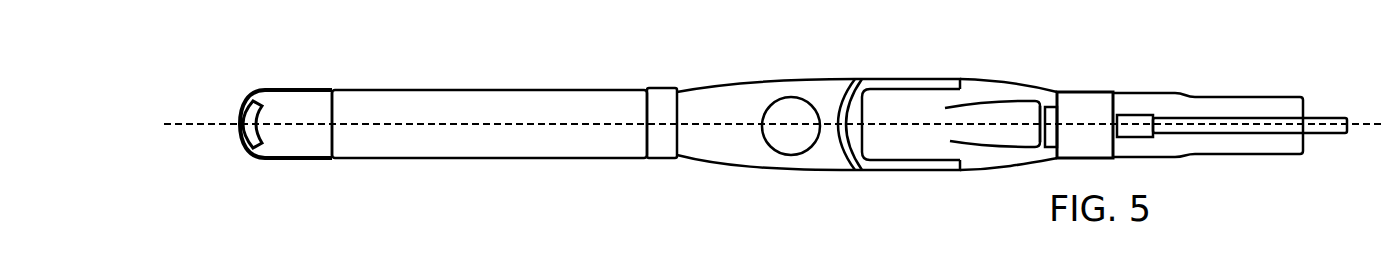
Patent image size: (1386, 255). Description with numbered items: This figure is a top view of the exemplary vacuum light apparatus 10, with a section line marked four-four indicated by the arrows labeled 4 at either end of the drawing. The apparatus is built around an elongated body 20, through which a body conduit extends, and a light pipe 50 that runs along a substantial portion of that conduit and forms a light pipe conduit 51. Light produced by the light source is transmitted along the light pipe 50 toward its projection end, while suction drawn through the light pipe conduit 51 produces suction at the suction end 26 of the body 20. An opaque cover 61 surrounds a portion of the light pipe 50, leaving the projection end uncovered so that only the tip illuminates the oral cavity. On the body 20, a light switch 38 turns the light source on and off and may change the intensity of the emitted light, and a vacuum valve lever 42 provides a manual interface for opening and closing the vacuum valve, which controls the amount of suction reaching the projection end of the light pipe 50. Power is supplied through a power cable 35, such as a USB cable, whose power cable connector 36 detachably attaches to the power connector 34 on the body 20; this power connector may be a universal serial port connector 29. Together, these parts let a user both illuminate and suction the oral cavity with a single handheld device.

The section line 4- 4 is at (164, 124).
The vacuum light apparatus 10 is at (732, 82).
The body 20 is at (946, 108).
The suction end 26 is at (668, 159).
The universal serial port connector 29 is at (1040, 135).
The power connector 34 is at (1040, 105).
The power cable 35 is at (1177, 125).
The power cable connector 36 is at (1091, 98).
The light switch 38 is at (795, 108).
The vacuum valve lever 42 is at (862, 90).
The light pipe 50 is at (528, 115).
The light pipe conduit 51 is at (447, 118).
The opaque cover 61 is at (565, 98).